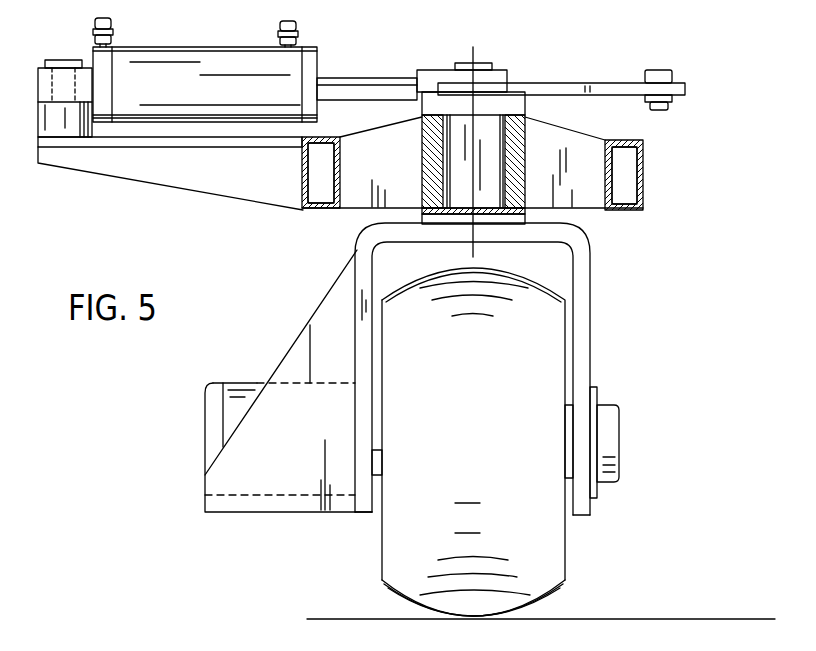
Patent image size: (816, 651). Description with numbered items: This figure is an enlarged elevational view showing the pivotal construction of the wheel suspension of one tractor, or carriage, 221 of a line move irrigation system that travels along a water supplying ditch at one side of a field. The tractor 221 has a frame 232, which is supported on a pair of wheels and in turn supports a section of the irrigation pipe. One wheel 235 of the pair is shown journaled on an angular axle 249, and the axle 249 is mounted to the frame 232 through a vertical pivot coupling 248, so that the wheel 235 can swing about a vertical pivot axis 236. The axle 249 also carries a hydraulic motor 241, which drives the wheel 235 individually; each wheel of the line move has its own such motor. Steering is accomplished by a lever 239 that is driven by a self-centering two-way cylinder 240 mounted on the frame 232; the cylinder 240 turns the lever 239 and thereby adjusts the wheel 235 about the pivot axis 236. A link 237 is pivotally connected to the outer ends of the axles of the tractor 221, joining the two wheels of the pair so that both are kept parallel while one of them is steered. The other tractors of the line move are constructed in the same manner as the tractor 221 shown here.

The tractor 221 is at (644, 239).
The frame 232 is at (305, 209).
The wheel 235 is at (383, 565).
The vertical pivot axis 236 is at (473, 50).
The link 237 is at (668, 81).
The lever 239 is at (484, 82).
The self-centering two-way cylinder 240 is at (217, 48).
The hydraulic motor 241 is at (250, 386).
The vertical pivot coupling 248 is at (591, 274).
The angular axle 249 is at (568, 402).